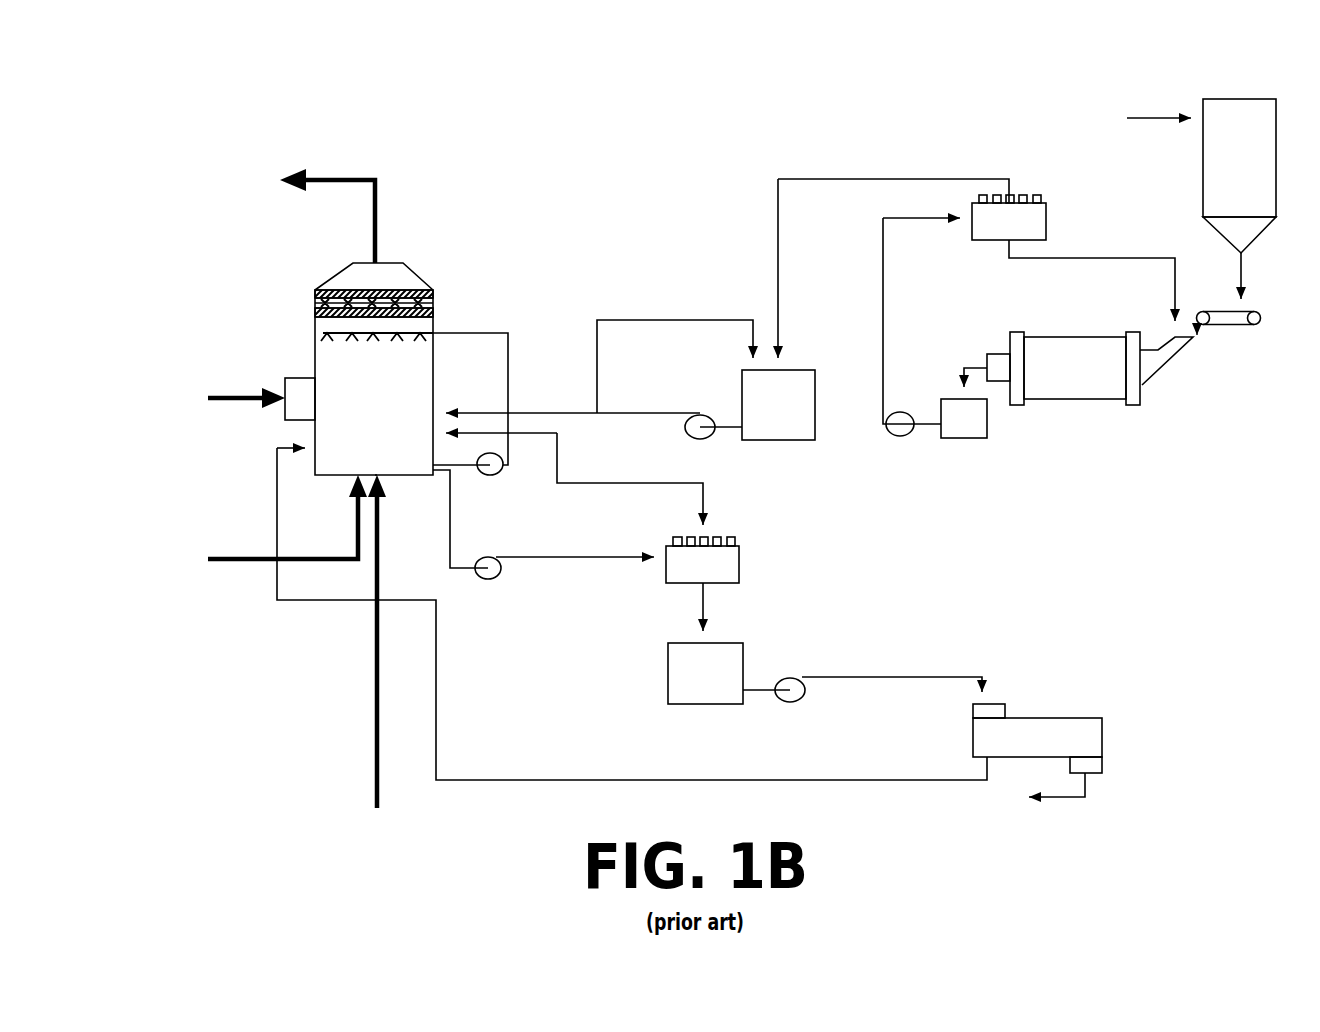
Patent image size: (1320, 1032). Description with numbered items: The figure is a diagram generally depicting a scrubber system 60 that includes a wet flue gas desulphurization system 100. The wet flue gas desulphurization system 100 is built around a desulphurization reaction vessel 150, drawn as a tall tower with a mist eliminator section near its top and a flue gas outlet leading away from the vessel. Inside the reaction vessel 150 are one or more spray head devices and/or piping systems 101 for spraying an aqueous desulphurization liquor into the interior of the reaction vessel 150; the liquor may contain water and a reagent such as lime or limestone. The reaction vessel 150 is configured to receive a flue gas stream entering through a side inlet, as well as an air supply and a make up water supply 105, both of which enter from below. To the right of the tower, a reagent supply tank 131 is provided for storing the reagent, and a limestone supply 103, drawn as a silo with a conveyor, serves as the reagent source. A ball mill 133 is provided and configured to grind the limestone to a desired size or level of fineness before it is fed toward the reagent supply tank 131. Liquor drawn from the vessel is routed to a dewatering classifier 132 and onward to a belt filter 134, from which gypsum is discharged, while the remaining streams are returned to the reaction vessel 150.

The scrubber system 60 is at (234, 93).
The wet flue gas desulphurization system 100 is at (480, 183).
The spray head devices and/or piping systems 101 is at (312, 345).
The limestone supply 103 is at (1196, 146).
The make up water supply 105 is at (362, 724).
The reagent supply tank 131 is at (790, 425).
The dewatering classifier 132 is at (724, 568).
The ball mill 133 is at (1070, 392).
The belt filter 134 is at (1092, 727).
The desulphurization reaction vessel 150 is at (343, 262).